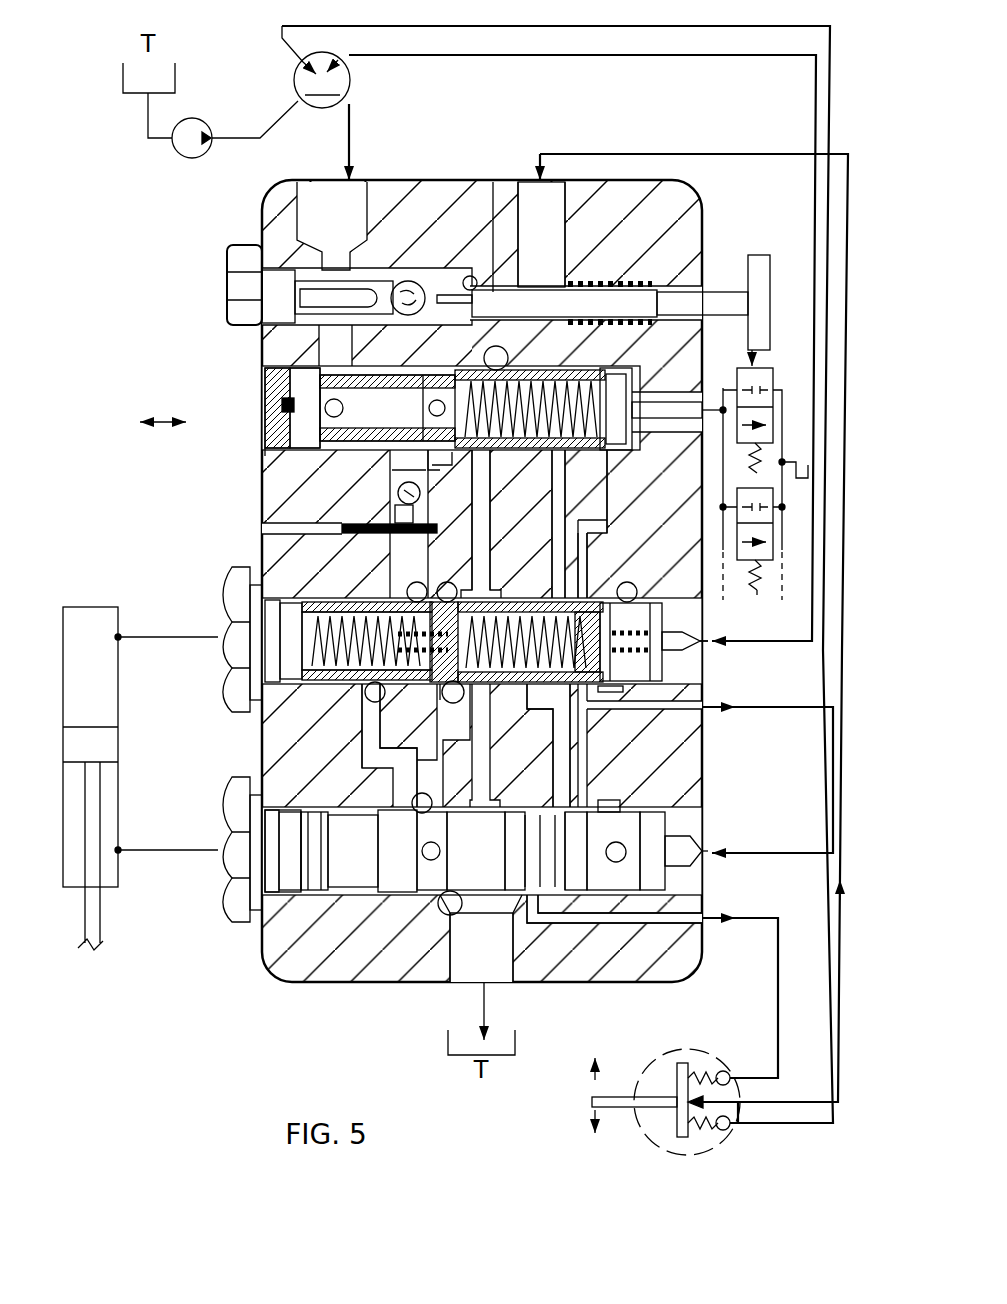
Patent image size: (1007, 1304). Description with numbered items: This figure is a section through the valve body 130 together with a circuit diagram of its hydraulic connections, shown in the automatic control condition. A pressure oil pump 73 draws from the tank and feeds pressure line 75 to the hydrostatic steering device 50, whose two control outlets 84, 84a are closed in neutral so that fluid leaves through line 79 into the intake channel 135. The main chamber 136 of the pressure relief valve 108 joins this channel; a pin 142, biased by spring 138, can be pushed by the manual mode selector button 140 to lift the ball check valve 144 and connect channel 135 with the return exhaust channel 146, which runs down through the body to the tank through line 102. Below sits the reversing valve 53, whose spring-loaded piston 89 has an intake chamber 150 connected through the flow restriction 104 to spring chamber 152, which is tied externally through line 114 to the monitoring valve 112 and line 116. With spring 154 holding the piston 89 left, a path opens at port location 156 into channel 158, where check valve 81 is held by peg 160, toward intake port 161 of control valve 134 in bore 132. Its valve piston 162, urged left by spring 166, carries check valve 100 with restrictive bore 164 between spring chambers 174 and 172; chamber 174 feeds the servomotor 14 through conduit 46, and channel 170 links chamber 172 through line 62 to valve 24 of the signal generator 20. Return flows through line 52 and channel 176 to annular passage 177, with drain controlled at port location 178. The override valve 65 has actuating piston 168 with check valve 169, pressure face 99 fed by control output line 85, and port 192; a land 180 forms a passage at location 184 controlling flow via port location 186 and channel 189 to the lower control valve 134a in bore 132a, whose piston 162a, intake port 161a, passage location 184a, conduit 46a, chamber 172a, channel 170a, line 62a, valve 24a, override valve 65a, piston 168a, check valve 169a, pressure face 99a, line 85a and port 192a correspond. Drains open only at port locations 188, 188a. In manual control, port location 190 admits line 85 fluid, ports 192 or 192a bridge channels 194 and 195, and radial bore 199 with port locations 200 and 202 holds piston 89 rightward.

The servomotor 14 is at (108, 787).
The signal generator 20 is at (656, 1152).
The valve of signal generator 24 is at (695, 1145).
The valve of signal generator 24a is at (688, 1068).
The conduit 46 is at (153, 637).
The conduit 46a is at (155, 850).
The hydrostatic steering device 50 is at (350, 77).
The line 52 is at (806, 1102).
The reversing valve 53 is at (256, 395).
The line 62 is at (795, 707).
The line 62a is at (778, 992).
The override valve 65 is at (712, 632).
The override valve 65a is at (712, 850).
The pressure oil pump 73 is at (185, 159).
The pressure line 75 is at (242, 138).
The line 79 is at (352, 137).
The check valve 81 is at (396, 505).
The control outlet 84 is at (332, 62).
The control outlet 84a is at (305, 68).
The control output line 85 is at (811, 633).
The control output line 85a is at (797, 853).
The valve piston 89 is at (274, 460).
The pressure face 99 is at (652, 614).
The pressure face 99a is at (675, 808).
The check valve 100 is at (440, 688).
The line 102 is at (488, 1002).
The flow restriction 104 is at (424, 375).
The pressure relief valve 108 is at (210, 306).
The monitoring valve 112 is at (765, 593).
The line 114 is at (735, 512).
The line 116 is at (780, 425).
The valve body 130 is at (385, 958).
The bore 132 is at (300, 598).
The bore 132a is at (300, 905).
The control valve 134 is at (213, 660).
The control valve 134a is at (215, 842).
The intake channel 135 is at (330, 346).
The main chamber 136 is at (400, 281).
The spring 138 is at (630, 284).
The manual mode selector button 140 is at (760, 262).
The pin 142 is at (492, 184).
The ball check valve 144 is at (445, 294).
The return exhaust channel 146 is at (492, 502).
The intake chamber 150 is at (368, 375).
The spring chamber 152 is at (605, 378).
The spring 154 is at (632, 380).
The port location 156 is at (405, 472).
The channel 158 is at (428, 515).
The peg 160 is at (392, 537).
The intake port 161 is at (385, 690).
The intake port 161a is at (380, 898).
The valve piston 162 is at (272, 690).
The valve piston 162a is at (272, 778).
The restrictive bore 164 is at (452, 604).
The spring 166 is at (552, 522).
The actuating piston 168 is at (700, 680).
The actuating piston 168a is at (700, 870).
The check valve 169 is at (700, 650).
The check valve 169a is at (695, 832).
The channel 170 is at (610, 709).
The channel 170a is at (594, 922).
The spring chamber 172 is at (530, 614).
The spring chamber 172a is at (530, 828).
The spring chamber 174 is at (350, 602).
The channel 176 is at (548, 247).
The annular passage 177 is at (560, 369).
The port location 178 is at (494, 345).
The valve land 180 is at (395, 612).
The valve passage location 184 is at (422, 588).
The valve passage location 184a is at (428, 796).
The port location 186 is at (365, 697).
The port location 188 is at (455, 705).
The port location 188a is at (440, 908).
The channel 189 is at (383, 757).
The port location 190 is at (630, 588).
The port 192 is at (590, 592).
The port 192a is at (585, 808).
The channel 194 is at (561, 483).
The channel 195 is at (608, 483).
The radial bore 199 is at (483, 356).
The port location 200 is at (432, 486).
The port location 202 is at (428, 497).